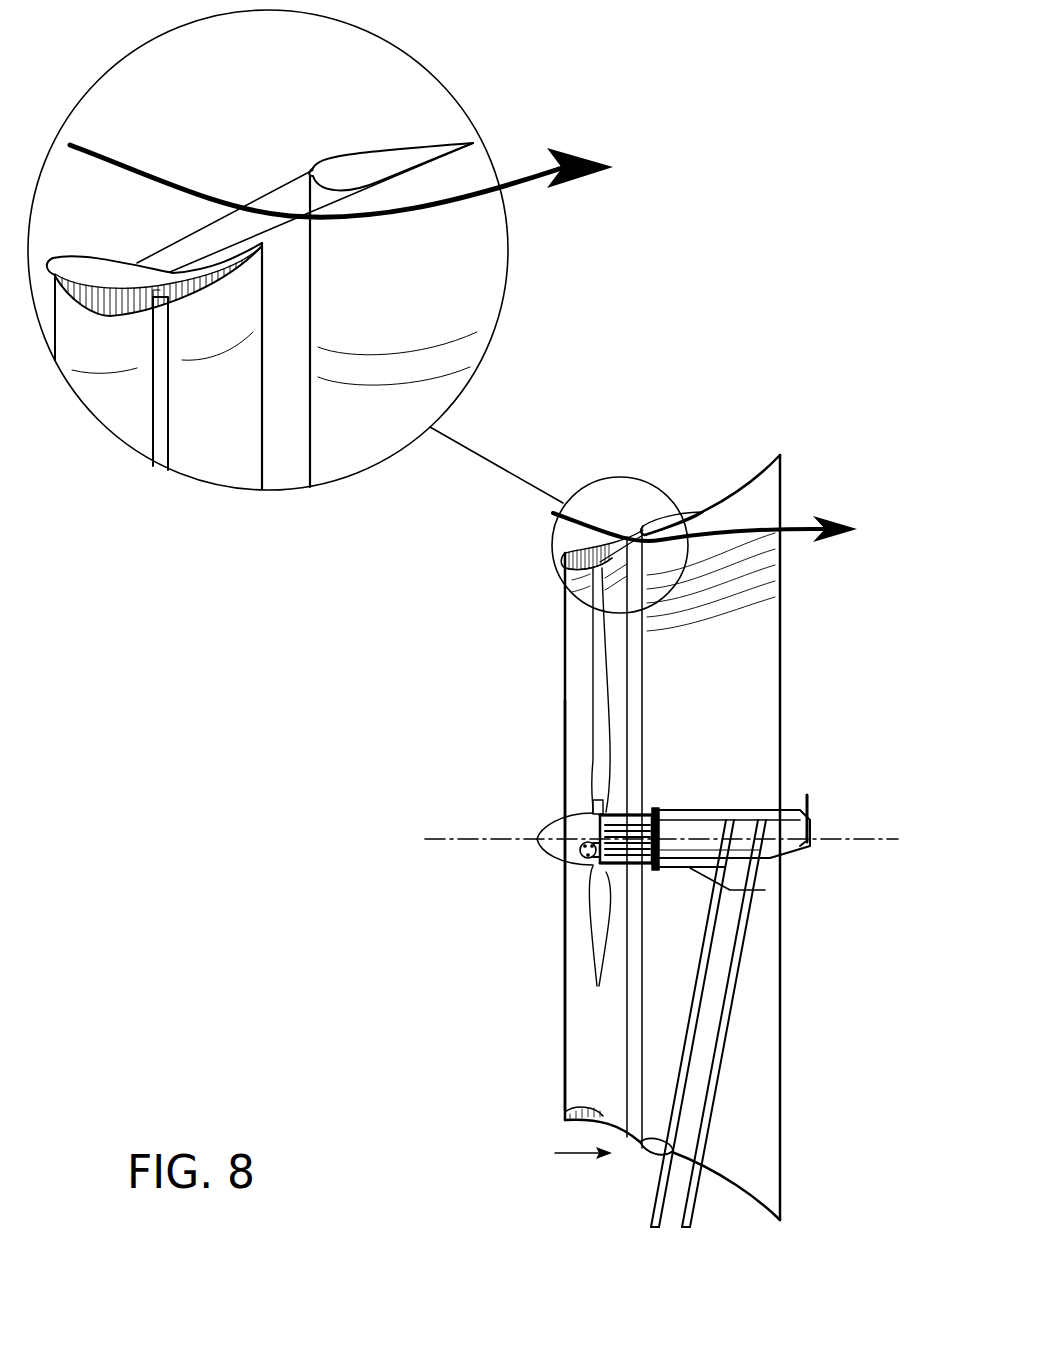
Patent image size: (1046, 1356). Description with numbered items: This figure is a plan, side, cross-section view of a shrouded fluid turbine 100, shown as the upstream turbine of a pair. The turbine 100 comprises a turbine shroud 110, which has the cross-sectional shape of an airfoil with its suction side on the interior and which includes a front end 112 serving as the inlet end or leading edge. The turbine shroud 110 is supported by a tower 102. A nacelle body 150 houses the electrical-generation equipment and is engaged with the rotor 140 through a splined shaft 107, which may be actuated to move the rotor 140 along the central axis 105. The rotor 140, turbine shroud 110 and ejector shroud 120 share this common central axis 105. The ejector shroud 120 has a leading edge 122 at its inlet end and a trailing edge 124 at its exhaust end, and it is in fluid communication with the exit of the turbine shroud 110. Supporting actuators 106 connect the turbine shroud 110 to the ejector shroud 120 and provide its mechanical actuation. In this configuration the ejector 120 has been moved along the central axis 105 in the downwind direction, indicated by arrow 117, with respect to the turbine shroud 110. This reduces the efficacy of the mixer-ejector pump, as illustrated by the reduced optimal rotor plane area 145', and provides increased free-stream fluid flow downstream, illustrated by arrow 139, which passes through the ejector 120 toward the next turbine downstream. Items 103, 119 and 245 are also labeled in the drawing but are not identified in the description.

The shrouded fluid turbine 100 is at (928, 47).
The tower 102 is at (673, 1207).
The generator 103 is at (627, 828).
The central axis 105 is at (870, 838).
The supporting actuators 106 is at (633, 1145).
The splined shaft 107 is at (573, 832).
The turbine shroud 110 is at (73, 268).
The front end 112 is at (575, 1063).
The arrow 117 is at (573, 1153).
The airflow 119 is at (118, 161).
The ejector shroud 120 is at (315, 172).
The leading edge 122 is at (647, 523).
The trailing edge 124 is at (782, 1088).
The arrow 139 is at (805, 527).
The rotor 140 is at (600, 672).
The reduced optimal rotor plane area 145' is at (320, 704).
The nacelle body 150 is at (783, 862).
The gap 245 is at (567, 568).